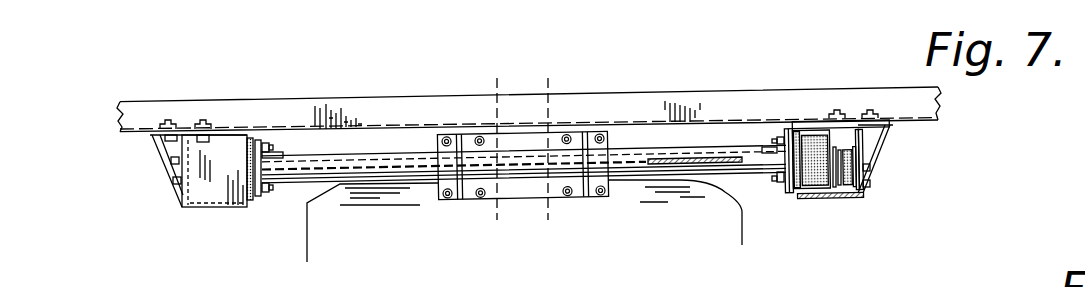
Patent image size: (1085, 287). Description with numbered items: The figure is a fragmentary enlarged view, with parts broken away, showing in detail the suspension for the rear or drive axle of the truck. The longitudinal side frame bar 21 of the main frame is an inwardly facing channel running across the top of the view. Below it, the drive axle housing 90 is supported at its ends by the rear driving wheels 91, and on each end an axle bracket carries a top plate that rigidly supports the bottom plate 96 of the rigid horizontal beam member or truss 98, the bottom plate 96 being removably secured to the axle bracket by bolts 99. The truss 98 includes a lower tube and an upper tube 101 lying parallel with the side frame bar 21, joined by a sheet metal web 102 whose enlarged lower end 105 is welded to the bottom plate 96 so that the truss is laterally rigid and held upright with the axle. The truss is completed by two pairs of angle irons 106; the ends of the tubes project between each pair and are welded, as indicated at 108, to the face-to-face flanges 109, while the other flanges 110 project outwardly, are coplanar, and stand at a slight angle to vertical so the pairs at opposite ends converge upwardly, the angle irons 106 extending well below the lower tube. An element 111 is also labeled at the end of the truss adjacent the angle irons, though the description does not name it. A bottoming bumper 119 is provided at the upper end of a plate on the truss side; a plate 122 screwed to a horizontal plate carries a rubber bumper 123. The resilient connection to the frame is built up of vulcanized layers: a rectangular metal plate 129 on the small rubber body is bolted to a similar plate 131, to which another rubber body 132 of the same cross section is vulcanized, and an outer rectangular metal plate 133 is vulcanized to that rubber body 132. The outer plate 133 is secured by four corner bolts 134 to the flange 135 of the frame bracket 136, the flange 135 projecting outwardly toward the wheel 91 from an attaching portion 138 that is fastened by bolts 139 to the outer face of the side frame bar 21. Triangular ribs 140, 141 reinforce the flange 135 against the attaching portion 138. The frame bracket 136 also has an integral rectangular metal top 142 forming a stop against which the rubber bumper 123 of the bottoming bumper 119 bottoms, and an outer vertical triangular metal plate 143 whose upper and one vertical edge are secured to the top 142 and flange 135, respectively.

The side frame bar 21 is at (343, 98).
The drive axle housing 90 is at (493, 84).
The rear driving wheel 91 is at (668, 200).
The bottom plate 96 is at (535, 198).
The truss 98 is at (627, 147).
The bolts 99 is at (600, 136).
The upper tube 101 is at (373, 156).
The sheet metal web 102 is at (690, 157).
The lower end of web 105 is at (463, 133).
The angle irons 106 is at (271, 146).
The weld 108 is at (279, 160).
The face-to-face flanges 109 is at (269, 190).
The outwardly projecting flanges 110 is at (789, 126).
The bar 111 is at (258, 140).
The bottoming bumper 119 is at (810, 148).
The plate 122 is at (795, 190).
The rubber bumper 123 is at (815, 188).
The rectangular metal plate 129 is at (840, 190).
The rectangular metal plate 131 is at (843, 192).
The rubber body 132 is at (852, 192).
The outer rectangular metal plate 133 is at (860, 192).
The corner bolts 134 is at (170, 162).
The flange 135 is at (865, 196).
The frame bracket 136 is at (171, 196).
The attaching portion 138 is at (848, 120).
The bolts 139 is at (203, 120).
The triangular rib 140 is at (168, 153).
The triangular rib 141 is at (160, 141).
The rectangular metal top 142 is at (225, 170).
The outer vertical triangular metal plate 143 is at (212, 208).